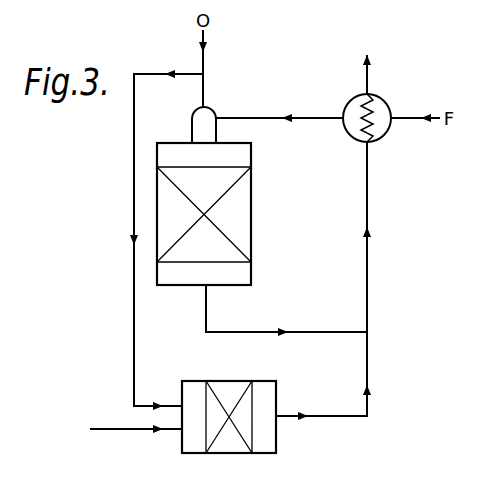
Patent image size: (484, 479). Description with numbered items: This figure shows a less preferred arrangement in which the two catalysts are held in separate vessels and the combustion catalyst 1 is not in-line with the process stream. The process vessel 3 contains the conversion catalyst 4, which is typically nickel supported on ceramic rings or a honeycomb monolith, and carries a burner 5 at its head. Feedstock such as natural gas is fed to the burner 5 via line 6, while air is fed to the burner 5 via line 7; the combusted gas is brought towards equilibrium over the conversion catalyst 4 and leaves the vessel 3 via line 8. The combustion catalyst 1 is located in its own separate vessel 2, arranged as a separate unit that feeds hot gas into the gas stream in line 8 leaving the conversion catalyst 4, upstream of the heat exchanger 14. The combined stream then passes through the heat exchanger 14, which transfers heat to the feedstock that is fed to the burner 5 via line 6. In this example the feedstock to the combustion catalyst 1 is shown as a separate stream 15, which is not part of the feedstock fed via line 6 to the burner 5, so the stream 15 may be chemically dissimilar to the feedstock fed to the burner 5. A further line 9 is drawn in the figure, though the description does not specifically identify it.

The combustion catalyst 1 is at (232, 380).
The vessel 2 is at (266, 380).
The vessel 3 is at (252, 191).
The conversion catalyst 4 is at (241, 218).
The burner 5 is at (192, 128).
The line 6 is at (308, 112).
The line 7 is at (205, 92).
The line 8 is at (252, 331).
The recycle line 9 is at (134, 316).
The heat exchanger 14 is at (385, 101).
The separate stream 15 is at (113, 426).